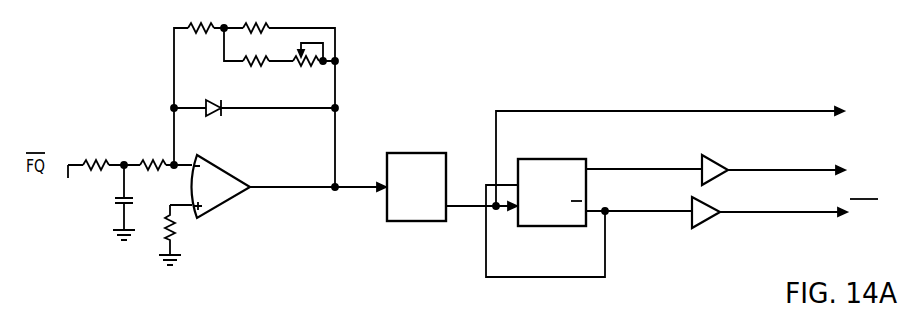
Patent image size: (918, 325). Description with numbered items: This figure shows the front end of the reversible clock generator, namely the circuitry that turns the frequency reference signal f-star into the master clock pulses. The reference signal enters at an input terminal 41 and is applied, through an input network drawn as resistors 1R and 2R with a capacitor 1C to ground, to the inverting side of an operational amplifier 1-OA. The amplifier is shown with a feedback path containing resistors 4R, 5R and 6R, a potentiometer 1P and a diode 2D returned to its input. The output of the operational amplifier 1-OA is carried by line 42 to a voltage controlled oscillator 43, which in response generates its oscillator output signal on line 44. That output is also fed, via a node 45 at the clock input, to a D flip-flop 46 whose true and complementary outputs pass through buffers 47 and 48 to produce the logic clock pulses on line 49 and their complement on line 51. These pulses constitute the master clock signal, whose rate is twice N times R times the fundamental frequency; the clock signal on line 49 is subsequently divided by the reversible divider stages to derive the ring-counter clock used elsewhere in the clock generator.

The input resistor 1R is at (96, 158).
The resistor 2R is at (151, 158).
The feedback resistor 4R is at (186, 27).
The feedback resistor 5R is at (257, 26).
The feedback resistor 6R is at (251, 65).
The potentiometer 1P is at (303, 65).
The diode 2D is at (214, 100).
The capacitor 1C is at (114, 199).
The operational amplifier 1-OA is at (221, 186).
The input terminal 41 is at (68, 178).
The line 42 is at (289, 189).
The voltage controlled oscillator 43 is at (387, 212).
The line 44 is at (456, 205).
The clock input node 45 is at (503, 213).
The D flip-flop 46 is at (556, 227).
The buffer amplifier 47 is at (704, 158).
The buffer amplifier 48 is at (696, 228).
The line 49 is at (750, 168).
The line 51 is at (760, 213).